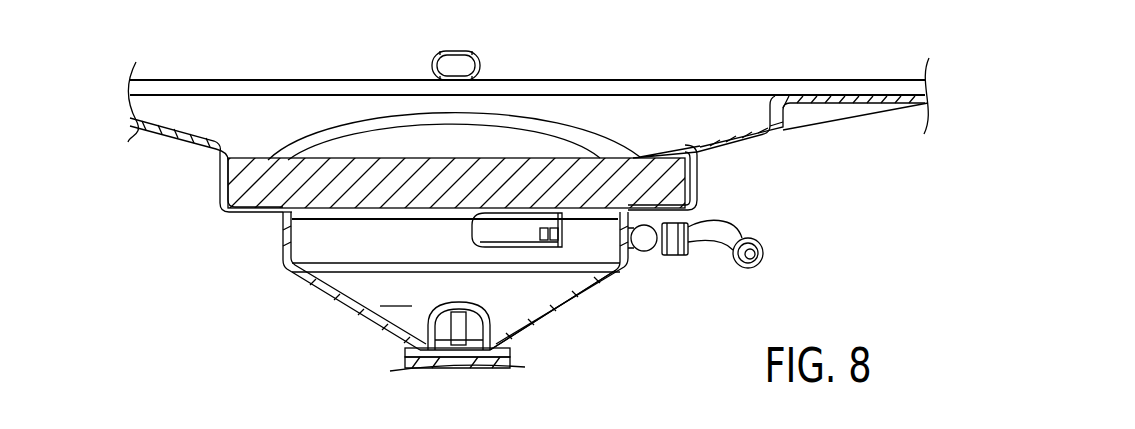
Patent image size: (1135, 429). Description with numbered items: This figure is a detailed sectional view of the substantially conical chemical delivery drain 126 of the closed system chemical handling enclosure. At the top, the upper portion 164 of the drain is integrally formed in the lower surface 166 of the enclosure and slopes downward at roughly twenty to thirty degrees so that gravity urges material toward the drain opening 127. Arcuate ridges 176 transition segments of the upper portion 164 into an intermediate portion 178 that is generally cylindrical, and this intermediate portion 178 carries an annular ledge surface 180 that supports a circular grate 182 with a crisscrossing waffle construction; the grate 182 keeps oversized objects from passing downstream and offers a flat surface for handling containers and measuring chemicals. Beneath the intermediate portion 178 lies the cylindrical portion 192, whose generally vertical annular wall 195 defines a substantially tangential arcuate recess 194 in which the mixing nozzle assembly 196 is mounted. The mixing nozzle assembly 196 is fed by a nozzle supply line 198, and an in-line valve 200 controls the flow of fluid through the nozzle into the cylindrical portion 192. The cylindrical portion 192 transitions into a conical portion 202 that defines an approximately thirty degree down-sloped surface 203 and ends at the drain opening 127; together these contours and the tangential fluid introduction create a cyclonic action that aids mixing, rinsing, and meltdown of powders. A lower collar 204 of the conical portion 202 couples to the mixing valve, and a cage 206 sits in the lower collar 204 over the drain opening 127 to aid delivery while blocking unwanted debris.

The chemical delivery drain 126 is at (303, 336).
The drain opening 127 is at (490, 366).
The upper portion 164 is at (694, 105).
The lower surface 166 is at (176, 140).
The arcuate ridges 176 is at (318, 135).
The intermediate portion 178 is at (218, 205).
The annular ledge surface 180 is at (263, 216).
The grate 182 is at (578, 166).
The cylindrical portion 192 is at (283, 258).
The arcuate recess 194 is at (472, 232).
The vertical annular wall 195 is at (295, 246).
The mixing nozzle assembly 196 is at (637, 270).
The nozzle supply line 198 is at (730, 223).
The in-line valve 200 is at (641, 249).
The conical portion 202 is at (556, 318).
The down-sloped surface 203 is at (395, 297).
The lower collar 204 is at (405, 354).
The cage 206 is at (483, 313).